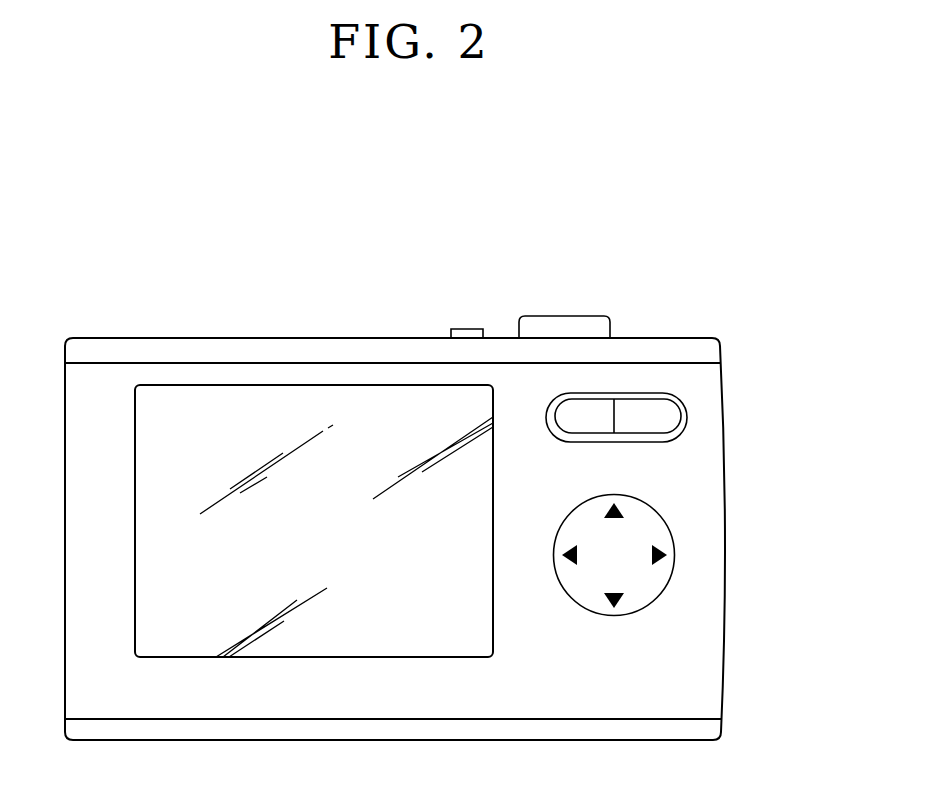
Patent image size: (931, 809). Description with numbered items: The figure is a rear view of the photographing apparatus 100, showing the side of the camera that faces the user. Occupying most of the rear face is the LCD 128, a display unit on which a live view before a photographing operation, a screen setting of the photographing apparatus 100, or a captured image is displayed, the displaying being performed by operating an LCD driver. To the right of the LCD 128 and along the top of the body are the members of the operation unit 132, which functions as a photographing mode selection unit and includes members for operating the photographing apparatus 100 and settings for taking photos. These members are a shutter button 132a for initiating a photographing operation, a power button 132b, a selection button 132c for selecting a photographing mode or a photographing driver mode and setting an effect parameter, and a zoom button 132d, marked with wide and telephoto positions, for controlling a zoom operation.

The photographing apparatus 100 is at (753, 288).
The LCD 128 is at (207, 402).
The operation unit 132 is at (463, 235).
The shutter button 132a is at (563, 325).
The power button 132b is at (468, 333).
The selection button 132c is at (657, 522).
The zoom button 132d is at (607, 403).